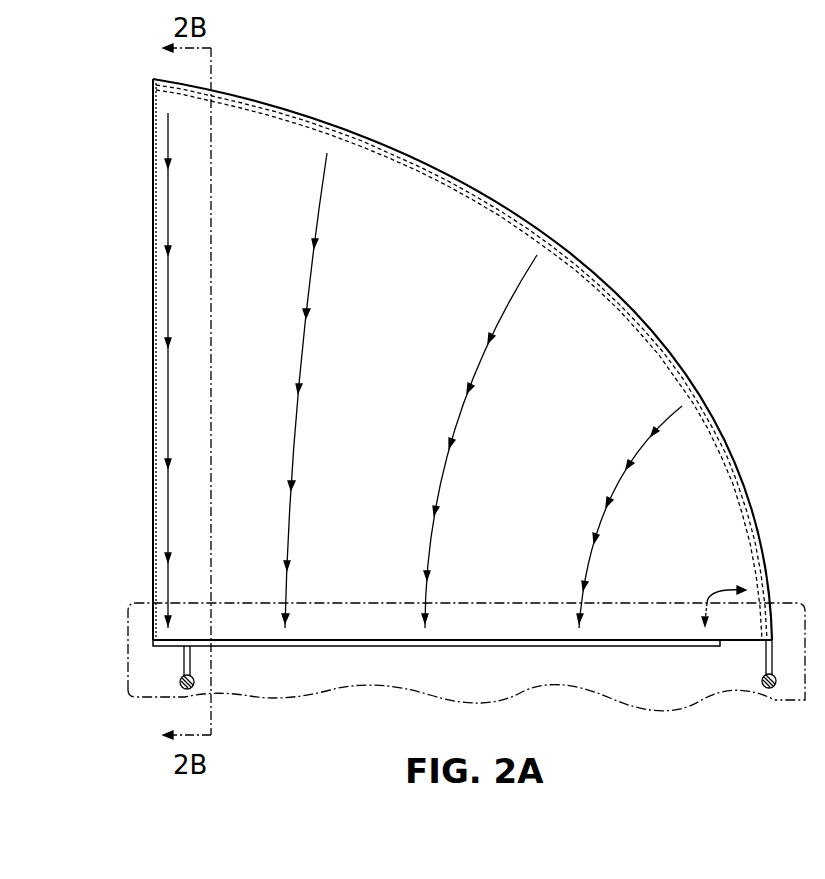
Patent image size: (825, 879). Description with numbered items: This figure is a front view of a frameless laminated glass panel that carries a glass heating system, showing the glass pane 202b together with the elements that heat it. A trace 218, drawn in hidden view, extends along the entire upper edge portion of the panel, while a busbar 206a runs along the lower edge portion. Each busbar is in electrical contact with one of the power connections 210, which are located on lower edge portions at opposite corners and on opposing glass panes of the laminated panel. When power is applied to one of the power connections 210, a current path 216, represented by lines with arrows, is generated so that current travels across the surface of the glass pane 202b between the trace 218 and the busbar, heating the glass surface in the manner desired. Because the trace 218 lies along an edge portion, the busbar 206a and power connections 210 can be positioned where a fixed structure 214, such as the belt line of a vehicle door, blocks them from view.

The glass pane 202b is at (152, 148).
The busbar 206a is at (592, 648).
The power connection 210 is at (178, 683).
The fixed structure 214 is at (308, 694).
The current path 216 is at (497, 318).
The trace 218 is at (547, 240).